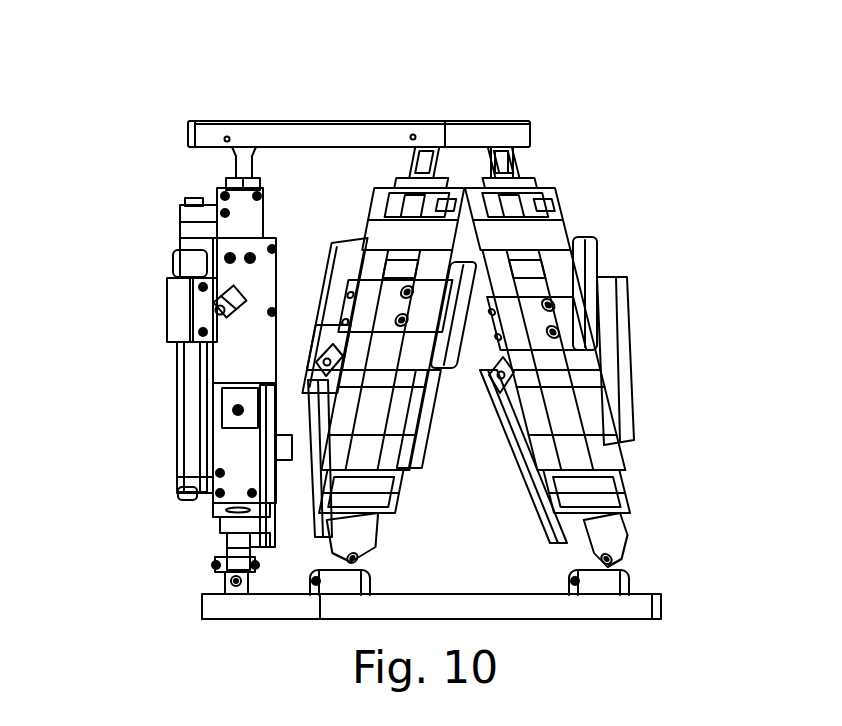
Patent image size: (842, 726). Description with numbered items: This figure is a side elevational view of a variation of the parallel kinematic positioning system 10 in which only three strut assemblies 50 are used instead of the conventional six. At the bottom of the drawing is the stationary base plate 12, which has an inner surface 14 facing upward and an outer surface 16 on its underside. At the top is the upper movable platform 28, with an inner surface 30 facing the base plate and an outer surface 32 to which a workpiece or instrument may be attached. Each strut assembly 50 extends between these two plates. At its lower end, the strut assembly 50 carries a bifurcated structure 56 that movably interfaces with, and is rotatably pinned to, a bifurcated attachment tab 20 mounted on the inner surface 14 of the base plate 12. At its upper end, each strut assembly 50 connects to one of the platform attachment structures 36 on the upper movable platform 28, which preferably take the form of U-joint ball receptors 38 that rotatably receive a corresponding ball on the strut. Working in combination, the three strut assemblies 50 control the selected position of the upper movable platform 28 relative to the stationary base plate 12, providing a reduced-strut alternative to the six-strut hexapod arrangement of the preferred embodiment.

The parallel kinematic positioning system 10 is at (153, 76).
The stationary base plate 12 is at (637, 610).
The inner surface 14 is at (210, 596).
The outer surface 16 is at (222, 618).
The bifurcated attachment tab 20 is at (628, 572).
The upper movable platform 28 is at (517, 137).
The inner surface 30 is at (517, 148).
The outer surface 32 is at (490, 118).
The platform attachment structures 36 is at (160, 168).
The U-joint ball receptor 38 is at (230, 148).
The strut assembly 50 is at (158, 288).
The bifurcated structure 56 is at (608, 534).